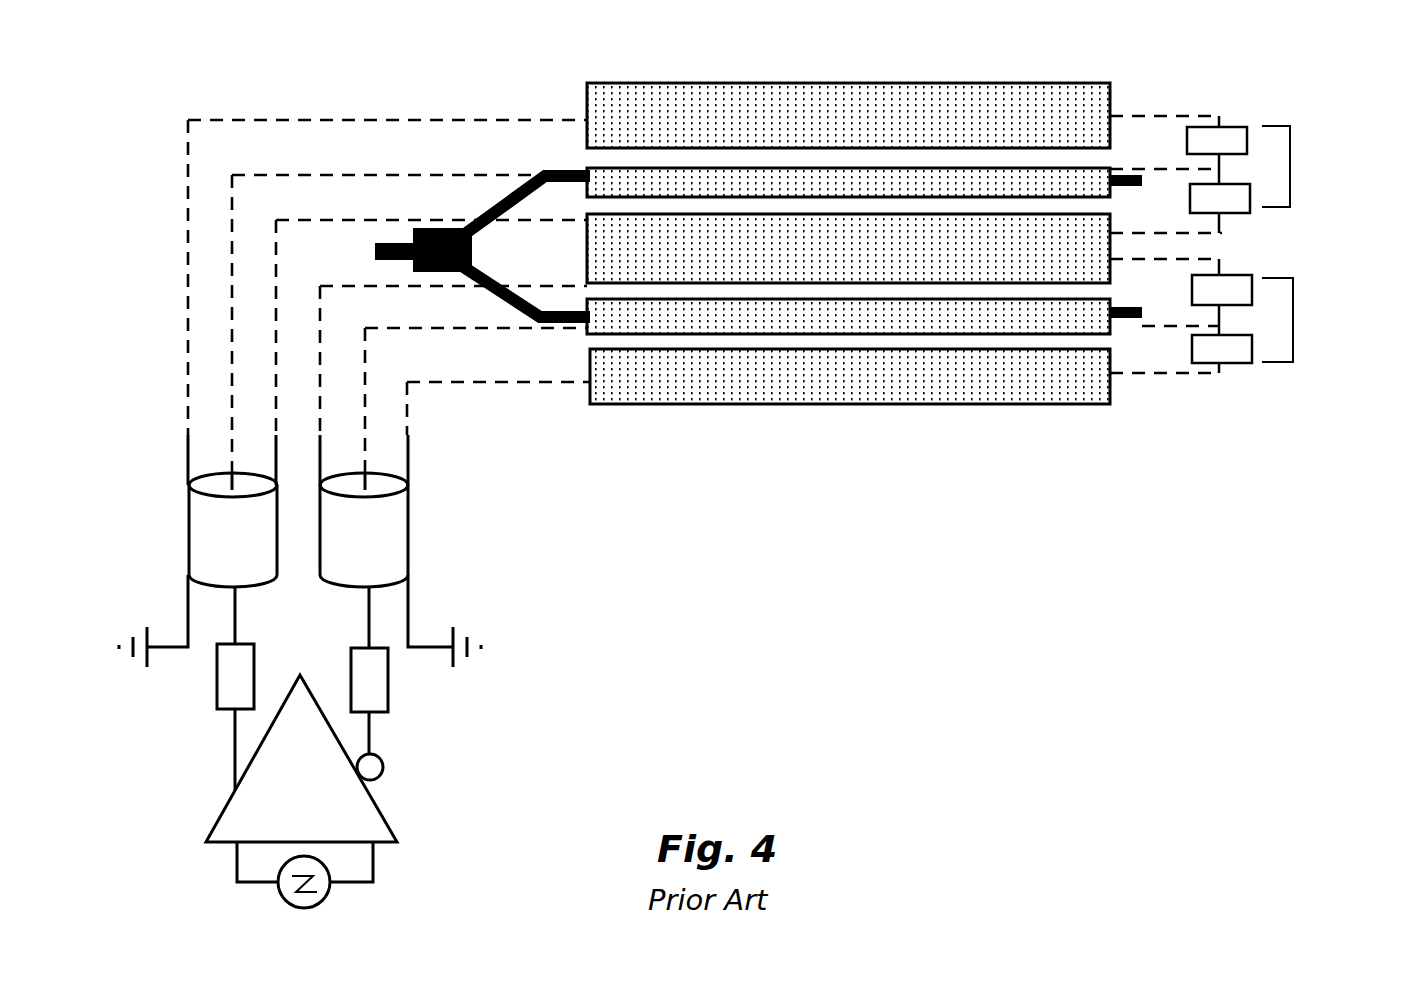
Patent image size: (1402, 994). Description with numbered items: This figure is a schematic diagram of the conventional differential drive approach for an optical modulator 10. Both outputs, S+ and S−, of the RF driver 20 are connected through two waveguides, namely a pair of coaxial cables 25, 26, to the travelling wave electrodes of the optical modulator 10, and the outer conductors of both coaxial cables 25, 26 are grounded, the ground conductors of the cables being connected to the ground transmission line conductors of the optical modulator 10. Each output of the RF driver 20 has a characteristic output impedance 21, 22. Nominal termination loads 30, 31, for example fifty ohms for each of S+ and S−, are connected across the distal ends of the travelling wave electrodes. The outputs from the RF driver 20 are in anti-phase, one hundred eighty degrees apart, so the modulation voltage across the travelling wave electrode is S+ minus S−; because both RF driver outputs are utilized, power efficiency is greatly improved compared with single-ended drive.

The optical modulator 10 is at (575, 77).
The RF driver 20 is at (287, 802).
The characteristic output impedance 21 is at (225, 670).
The characteristic output impedance 22 is at (380, 683).
The coaxial cable 25 is at (207, 532).
The coaxial cable 26 is at (398, 523).
The nominal termination load 30 is at (1290, 165).
The nominal termination load 31 is at (1293, 320).